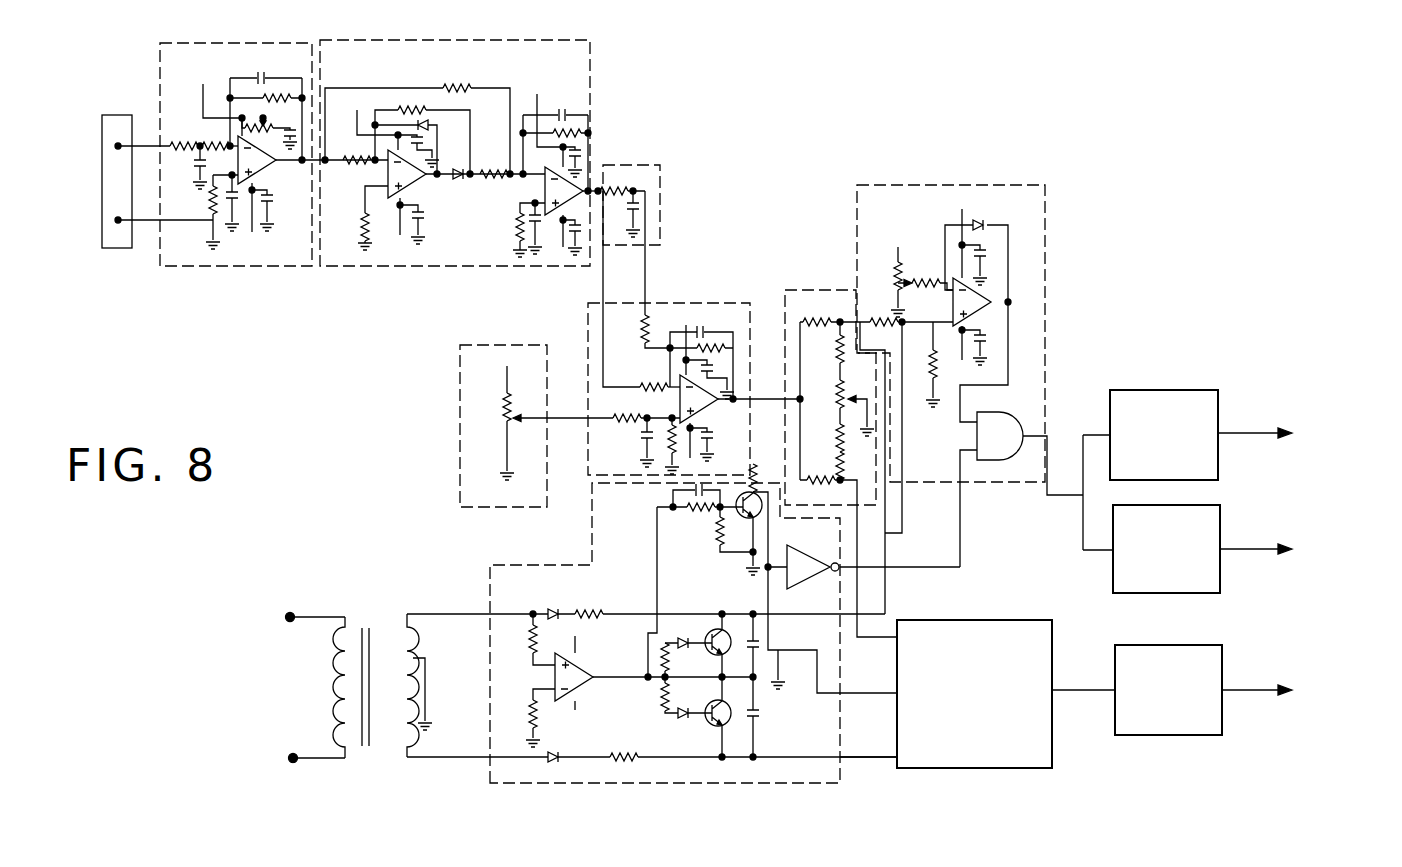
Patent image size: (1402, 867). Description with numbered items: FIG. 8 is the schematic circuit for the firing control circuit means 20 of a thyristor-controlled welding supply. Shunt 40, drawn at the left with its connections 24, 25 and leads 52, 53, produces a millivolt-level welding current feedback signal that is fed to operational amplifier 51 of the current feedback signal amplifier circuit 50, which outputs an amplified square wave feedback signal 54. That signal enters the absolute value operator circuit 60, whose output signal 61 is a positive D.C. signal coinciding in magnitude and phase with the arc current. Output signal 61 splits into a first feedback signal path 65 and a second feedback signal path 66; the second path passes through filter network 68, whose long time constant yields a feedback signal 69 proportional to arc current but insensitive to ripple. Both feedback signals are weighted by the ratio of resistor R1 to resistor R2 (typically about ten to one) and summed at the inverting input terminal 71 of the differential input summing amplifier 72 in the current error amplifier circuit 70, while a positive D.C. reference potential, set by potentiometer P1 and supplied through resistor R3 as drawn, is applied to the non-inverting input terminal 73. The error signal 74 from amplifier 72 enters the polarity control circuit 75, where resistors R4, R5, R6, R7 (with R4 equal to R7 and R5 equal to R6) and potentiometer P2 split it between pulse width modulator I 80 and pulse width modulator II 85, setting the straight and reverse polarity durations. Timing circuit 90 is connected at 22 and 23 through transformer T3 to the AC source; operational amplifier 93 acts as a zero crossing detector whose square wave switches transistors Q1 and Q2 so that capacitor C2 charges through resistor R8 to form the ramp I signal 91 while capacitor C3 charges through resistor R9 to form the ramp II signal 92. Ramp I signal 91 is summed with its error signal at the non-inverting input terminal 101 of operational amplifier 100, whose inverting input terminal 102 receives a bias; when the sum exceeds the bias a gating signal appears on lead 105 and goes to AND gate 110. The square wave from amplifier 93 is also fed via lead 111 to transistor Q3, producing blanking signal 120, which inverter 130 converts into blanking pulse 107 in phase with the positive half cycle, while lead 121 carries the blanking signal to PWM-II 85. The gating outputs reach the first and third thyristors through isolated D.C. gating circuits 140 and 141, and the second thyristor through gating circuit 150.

The firing control circuit means 20 is at (680, 54).
The transformer connection point 22 is at (290, 613).
The transformer connection point 23 is at (294, 759).
The sensor terminal 24 is at (117, 222).
The sensor terminal 25 is at (114, 143).
The shunt 40 is at (93, 173).
The current feedback signal amplifier circuit 50 is at (243, 43).
The operational amplifier 51 is at (268, 164).
The sensor lead 52 is at (148, 228).
The sensor lead 53 is at (152, 142).
The amplified square wave feedback signal 54 is at (322, 160).
The absolute value operator circuit 60 is at (425, 41).
The output signal 61 is at (596, 188).
The first feedback signal path 65 is at (600, 292).
The second feedback signal path 66 is at (603, 188).
The filter network 68 is at (660, 165).
The feedback signal 69 is at (646, 277).
The current error amplifier circuit 70 is at (735, 303).
The inverting input terminal 71 is at (668, 383).
The differential input summing amplifier 72 is at (708, 406).
The non-inverting input terminal 73 is at (642, 421).
The error signal 74 is at (767, 394).
The polarity control circuit 75 is at (795, 289).
The pulse width modulator I 80 is at (1025, 185).
The pulse width modulator II 85 is at (1003, 619).
The timing circuit 90 is at (538, 566).
The ramp I signal 91 is at (904, 493).
The ramp II signal 92 is at (868, 753).
The operational amplifier 93 is at (580, 688).
The operational amplifier 100 is at (1006, 304).
The non-inverting input terminal 101 is at (906, 333).
The inverting input terminal 102 is at (945, 280).
The lead 105 is at (1010, 367).
The blanking pulse 107 is at (963, 528).
The AND gate 110 is at (1006, 452).
The lead 111 is at (657, 532).
The blanking signal 120 is at (770, 556).
The lead 121 is at (788, 650).
The inverter 130 is at (828, 559).
The isolated D.C. gating circuit 140 is at (1140, 389).
The isolated D.C. gating circuit 141 is at (1130, 595).
The isolated D.C. gating circuit 150 is at (1211, 645).
The resistor R1 is at (644, 319).
The resistor R2 is at (634, 389).
The resistor R3 is at (623, 418).
The resistor R4 is at (813, 310).
The resistor R5 is at (838, 352).
The resistor R6 is at (826, 438).
The resistor R7 is at (824, 462).
The resistor R8 is at (629, 609).
The resistor R9 is at (619, 755).
The potentiometer P1 is at (505, 415).
The potentiometer P2 is at (840, 408).
The transistor Q1 is at (712, 718).
The transistor Q2 is at (730, 645).
The transistor Q3 is at (762, 503).
The capacitor C2 is at (757, 642).
The capacitor C3 is at (760, 711).
The transformer T3 is at (366, 618).